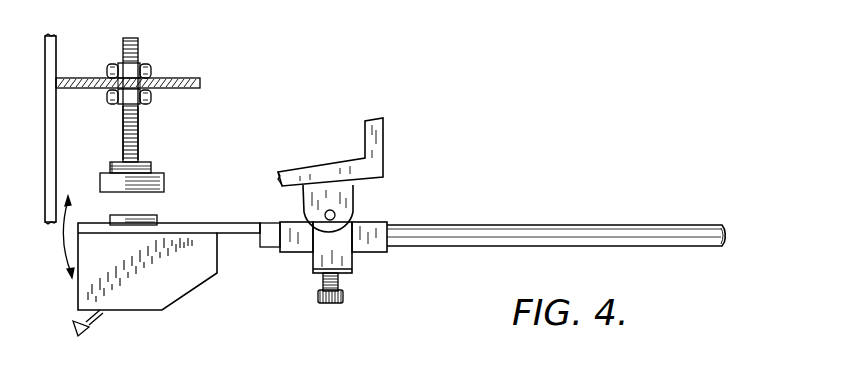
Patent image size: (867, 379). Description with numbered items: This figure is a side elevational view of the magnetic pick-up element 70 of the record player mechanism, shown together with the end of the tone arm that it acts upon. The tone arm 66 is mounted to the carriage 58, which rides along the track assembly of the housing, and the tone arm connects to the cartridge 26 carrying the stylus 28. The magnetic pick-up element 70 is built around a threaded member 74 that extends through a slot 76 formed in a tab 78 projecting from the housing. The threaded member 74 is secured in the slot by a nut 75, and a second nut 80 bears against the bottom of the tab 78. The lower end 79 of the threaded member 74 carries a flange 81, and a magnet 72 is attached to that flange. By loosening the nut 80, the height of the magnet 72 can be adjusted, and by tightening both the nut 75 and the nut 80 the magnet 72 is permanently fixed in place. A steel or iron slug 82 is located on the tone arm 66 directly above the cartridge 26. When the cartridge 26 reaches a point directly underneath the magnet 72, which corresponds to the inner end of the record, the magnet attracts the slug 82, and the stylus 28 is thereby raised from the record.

The cartridge 26 is at (185, 283).
The stylus 28 is at (75, 322).
The carriage 58 is at (385, 143).
The tone arm 66 is at (562, 228).
The magnetic pick-up element 70 is at (151, 157).
The magnet 72 is at (165, 182).
The threaded member 74 is at (139, 49).
The nut 75 is at (151, 70).
The slot 76 is at (117, 79).
The tab 78 is at (202, 82).
The lower end 79 is at (123, 160).
The nut 80 is at (151, 97).
The flange 81 is at (117, 163).
The slug 82 is at (158, 219).